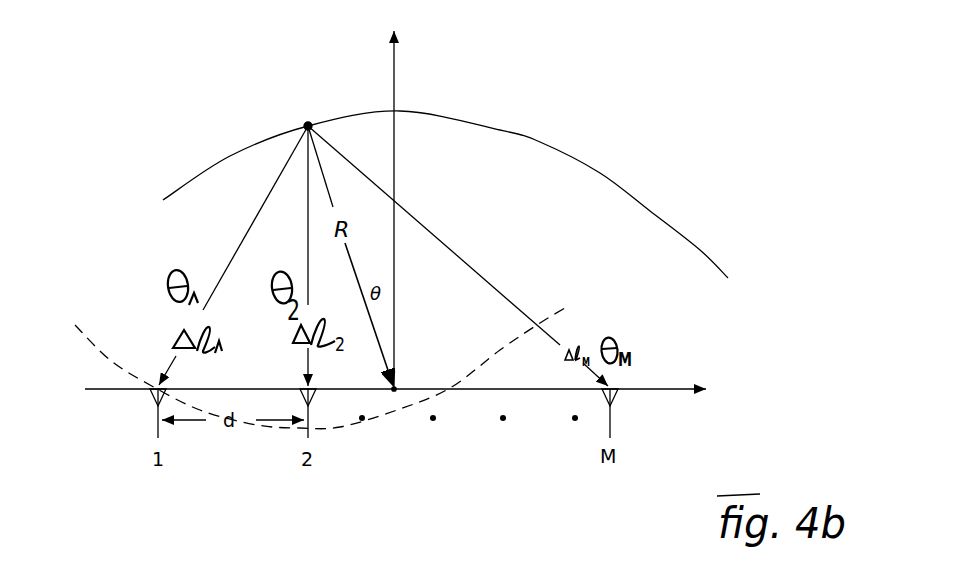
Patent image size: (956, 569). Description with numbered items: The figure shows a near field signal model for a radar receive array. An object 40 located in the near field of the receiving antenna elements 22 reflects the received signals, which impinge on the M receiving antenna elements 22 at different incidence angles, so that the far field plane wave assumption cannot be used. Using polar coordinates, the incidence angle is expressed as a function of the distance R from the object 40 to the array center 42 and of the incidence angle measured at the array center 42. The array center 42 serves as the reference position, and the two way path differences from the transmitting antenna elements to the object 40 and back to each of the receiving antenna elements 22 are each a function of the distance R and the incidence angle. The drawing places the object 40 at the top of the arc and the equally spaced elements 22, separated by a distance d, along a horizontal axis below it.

The object 40 is at (308, 126).
The array center 42 is at (393, 391).
The receiving antenna elements 22 is at (152, 418).